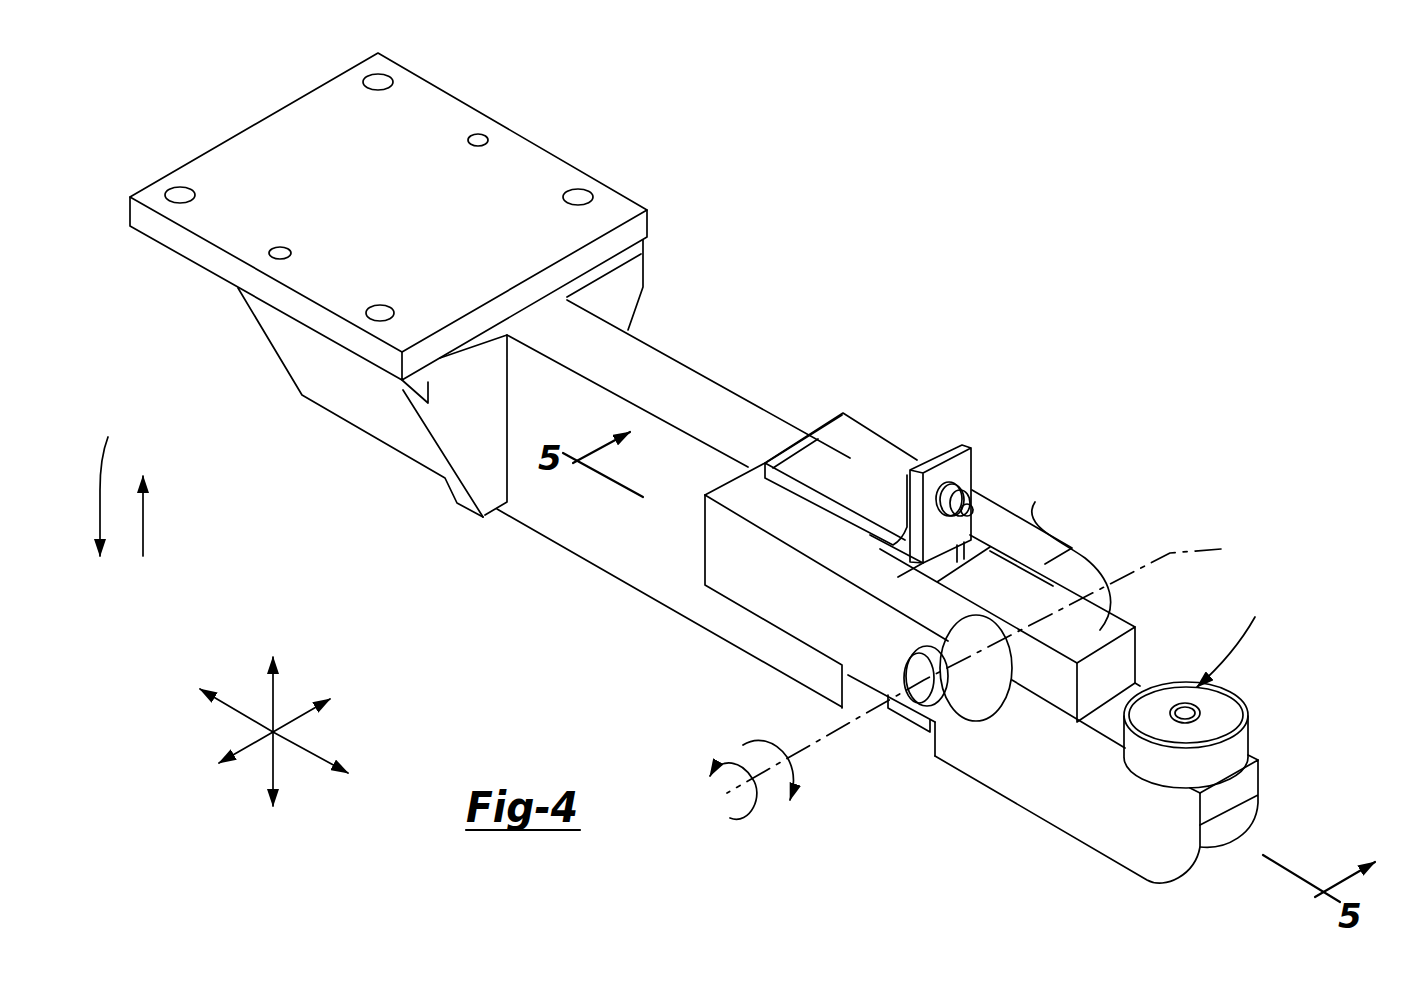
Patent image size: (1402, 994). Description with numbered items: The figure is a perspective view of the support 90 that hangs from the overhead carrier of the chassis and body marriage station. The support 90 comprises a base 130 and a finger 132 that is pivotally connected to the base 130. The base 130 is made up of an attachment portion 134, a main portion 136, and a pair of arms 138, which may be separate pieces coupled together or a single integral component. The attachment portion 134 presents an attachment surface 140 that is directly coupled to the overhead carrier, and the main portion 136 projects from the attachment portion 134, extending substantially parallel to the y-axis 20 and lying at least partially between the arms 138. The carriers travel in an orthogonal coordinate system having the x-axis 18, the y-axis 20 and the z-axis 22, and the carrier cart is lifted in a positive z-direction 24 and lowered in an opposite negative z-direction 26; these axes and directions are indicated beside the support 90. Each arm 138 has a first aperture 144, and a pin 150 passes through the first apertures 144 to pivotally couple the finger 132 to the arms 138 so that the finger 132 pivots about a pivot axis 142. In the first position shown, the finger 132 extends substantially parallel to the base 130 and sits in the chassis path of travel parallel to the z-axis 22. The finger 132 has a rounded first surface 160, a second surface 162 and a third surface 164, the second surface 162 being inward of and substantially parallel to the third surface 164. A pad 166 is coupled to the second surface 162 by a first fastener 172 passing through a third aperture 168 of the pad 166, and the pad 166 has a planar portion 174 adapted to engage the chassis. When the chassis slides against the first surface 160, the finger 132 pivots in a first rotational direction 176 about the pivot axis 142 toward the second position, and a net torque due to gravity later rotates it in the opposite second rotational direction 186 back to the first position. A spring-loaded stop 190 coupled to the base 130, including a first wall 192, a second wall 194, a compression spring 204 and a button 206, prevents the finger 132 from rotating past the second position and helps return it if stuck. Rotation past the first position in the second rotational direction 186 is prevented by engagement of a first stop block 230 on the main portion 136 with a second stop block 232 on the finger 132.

The x-axis 18 is at (245, 755).
The y-axis 20 is at (230, 710).
The z-axis 22 is at (272, 690).
The positive z-direction 24 is at (148, 507).
The negative z-direction 26 is at (110, 483).
The support 90 is at (971, 183).
The base 130 is at (712, 403).
The finger 132 is at (1100, 630).
The attachment portion 134 is at (567, 165).
The main portion 136 is at (659, 354).
The arms 138 is at (887, 440).
The attachment surface 140 is at (452, 165).
The pivot axis 142 is at (991, 664).
The first aperture 144 is at (960, 722).
The pin 150 is at (915, 672).
The first surface 160 is at (1218, 840).
The second surface 162 is at (1110, 723).
The third surface 164 is at (993, 577).
The pad 166 is at (1223, 757).
The third aperture 168 is at (1203, 712).
The first fastener 172 is at (1177, 702).
The planar portion 174 is at (1239, 639).
The first rotational direction 176 is at (730, 820).
The second rotational direction 186 is at (793, 773).
The spring-loaded stop 190 is at (963, 451).
The first wall 192 is at (837, 460).
The second wall 194 is at (960, 467).
The compression spring 204 is at (952, 487).
The button 206 is at (970, 514).
The first stop block 230 is at (863, 682).
The second stop block 232 is at (917, 720).